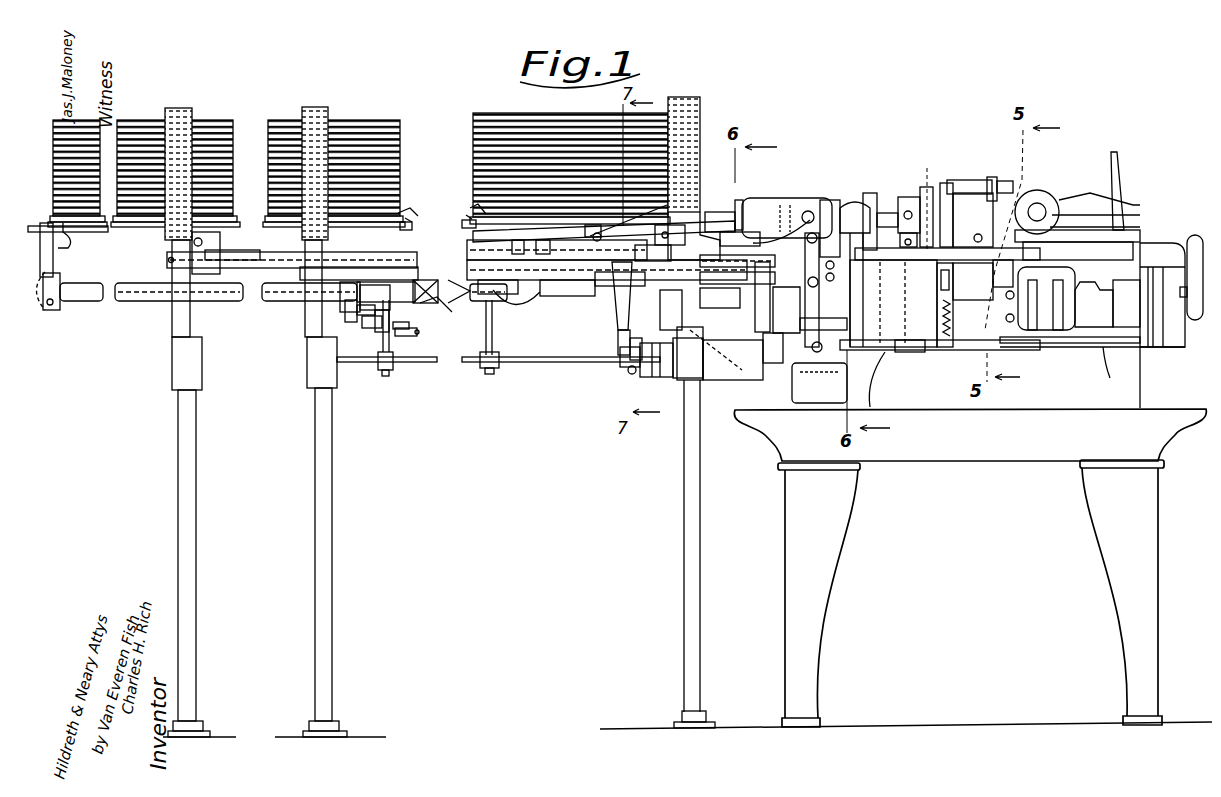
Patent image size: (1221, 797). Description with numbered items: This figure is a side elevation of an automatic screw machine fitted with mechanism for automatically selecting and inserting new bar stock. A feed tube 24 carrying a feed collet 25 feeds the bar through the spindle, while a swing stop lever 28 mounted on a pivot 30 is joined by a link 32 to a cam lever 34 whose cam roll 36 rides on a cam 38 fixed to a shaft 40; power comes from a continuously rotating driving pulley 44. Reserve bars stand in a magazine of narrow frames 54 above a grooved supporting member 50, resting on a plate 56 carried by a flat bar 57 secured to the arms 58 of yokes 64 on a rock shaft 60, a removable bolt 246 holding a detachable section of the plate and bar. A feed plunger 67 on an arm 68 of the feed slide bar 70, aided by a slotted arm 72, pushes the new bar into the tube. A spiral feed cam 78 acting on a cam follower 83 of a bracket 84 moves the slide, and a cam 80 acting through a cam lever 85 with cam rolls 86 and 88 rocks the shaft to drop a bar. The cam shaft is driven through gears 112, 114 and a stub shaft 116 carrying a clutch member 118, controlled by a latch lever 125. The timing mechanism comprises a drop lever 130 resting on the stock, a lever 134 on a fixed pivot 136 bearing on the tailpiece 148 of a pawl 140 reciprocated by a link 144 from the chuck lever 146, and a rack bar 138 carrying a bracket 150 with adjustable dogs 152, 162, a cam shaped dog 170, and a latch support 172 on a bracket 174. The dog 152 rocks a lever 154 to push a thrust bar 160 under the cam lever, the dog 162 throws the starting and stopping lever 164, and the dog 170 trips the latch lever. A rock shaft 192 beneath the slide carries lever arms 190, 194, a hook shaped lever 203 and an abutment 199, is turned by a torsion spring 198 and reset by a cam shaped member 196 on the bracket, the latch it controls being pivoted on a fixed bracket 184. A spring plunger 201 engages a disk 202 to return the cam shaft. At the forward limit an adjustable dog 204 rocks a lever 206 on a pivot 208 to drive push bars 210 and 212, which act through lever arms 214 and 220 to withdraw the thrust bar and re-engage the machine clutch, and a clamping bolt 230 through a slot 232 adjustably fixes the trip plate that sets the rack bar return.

The feed tube 24 is at (836, 249).
The feed collet 25 is at (908, 202).
The swing stop lever 28 is at (1000, 179).
The pivot 30 is at (970, 191).
The link 32 is at (926, 305).
The cam lever 34 is at (940, 294).
The cam roll 36 is at (916, 315).
The cam 38 is at (918, 285).
The shaft 40 is at (1029, 295).
The driving pulley 44 is at (758, 320).
The supporting member 50 is at (466, 223).
The narrow frames 54 is at (186, 105).
The plate 56 is at (473, 208).
The flat bar 57 is at (470, 213).
The arms 58 is at (220, 253).
The rock shaft 60 is at (232, 286).
The yokes 64 is at (604, 234).
The feed plunger 67 is at (64, 174).
The arm 68 is at (45, 306).
The feed slide bar 70 is at (208, 308).
The arm 72 is at (68, 250).
The spiral feed cam 78 is at (441, 305).
The cam 80 is at (311, 314).
The cam follower 83 is at (394, 267).
The bracket 84 is at (397, 326).
The cam lever 85 is at (379, 274).
The cam roll 86 is at (359, 265).
The cam roll 88 is at (357, 272).
The gear 112 is at (689, 310).
The gear 114 is at (723, 298).
The stub shaft 116 is at (737, 283).
The clutch member 118 is at (654, 255).
The latch lever 125 is at (603, 341).
The drop lever 130 is at (745, 205).
The lever 134 is at (633, 155).
The fixed pivot 136 is at (607, 153).
The rack bar 138 is at (848, 217).
The pawl 140 is at (564, 173).
The link 144 is at (787, 207).
The chuck lever 146 is at (802, 204).
The tailpiece 148 is at (519, 173).
The bracket 150 is at (758, 347).
The adjustable dog 152 is at (800, 292).
The lever 154 is at (842, 330).
The thrust bar 160 is at (920, 360).
The adjustable dog 162 is at (853, 288).
The starting and stopping lever 164 is at (855, 273).
The cam shaped dog 170 is at (592, 297).
The latch support 172 is at (722, 190).
The bracket 174 is at (737, 267).
The fixed bracket 184 is at (620, 275).
The lever arm 190 is at (601, 370).
The rock shaft 192 is at (546, 379).
The lever arm 194 is at (387, 381).
The cam shaped member 196 is at (319, 350).
The torsion spring 198 is at (656, 375).
The abutment 199 is at (638, 381).
The spring plunger 201 is at (316, 342).
The disk 202 is at (311, 327).
The hook shaped lever 203 is at (507, 352).
The adjustable dog 204 is at (424, 339).
The lever 206 is at (607, 350).
The pivot 208 is at (613, 375).
The push bar 210 is at (726, 372).
The push bar 212 is at (703, 527).
The lever arm 214 is at (819, 383).
The lever arm 220 is at (877, 379).
The clamping bolt 230 is at (513, 322).
The slot 232 is at (292, 253).
The removable bolt 246 is at (707, 170).